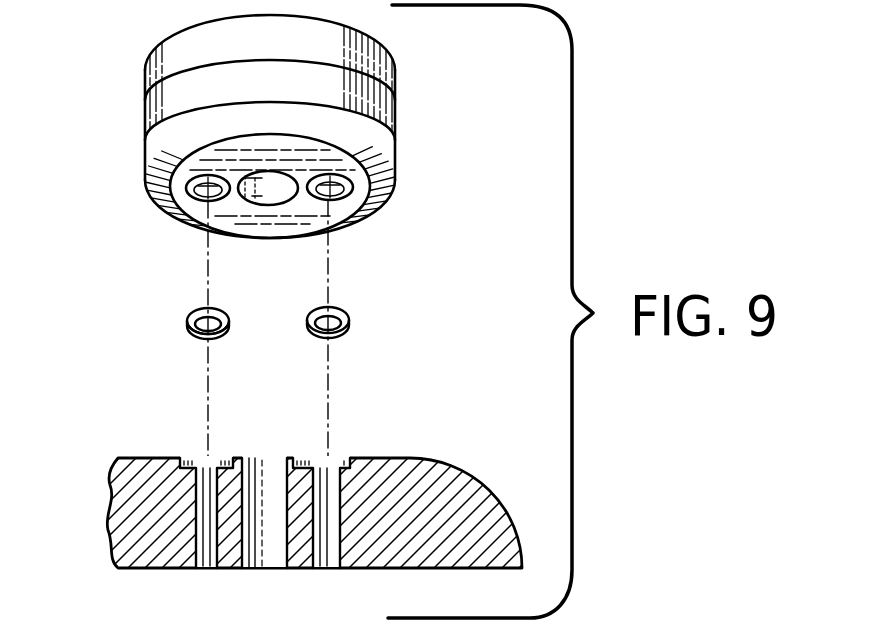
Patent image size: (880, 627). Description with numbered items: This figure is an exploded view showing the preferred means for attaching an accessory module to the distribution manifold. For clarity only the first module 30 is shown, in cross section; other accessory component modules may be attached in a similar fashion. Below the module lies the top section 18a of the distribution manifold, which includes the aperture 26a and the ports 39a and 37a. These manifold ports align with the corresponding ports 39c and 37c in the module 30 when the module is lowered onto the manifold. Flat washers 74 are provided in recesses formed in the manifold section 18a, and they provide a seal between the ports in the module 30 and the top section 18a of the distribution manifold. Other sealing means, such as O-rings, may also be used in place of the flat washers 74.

The first module 30 is at (146, 72).
The port 39c is at (195, 202).
The port 37c is at (347, 198).
The flat washers 74 is at (188, 334).
The section top of the distribution manifold 18a is at (423, 482).
The aperture 26a is at (265, 483).
The port 39a is at (205, 569).
The port 37a is at (325, 569).